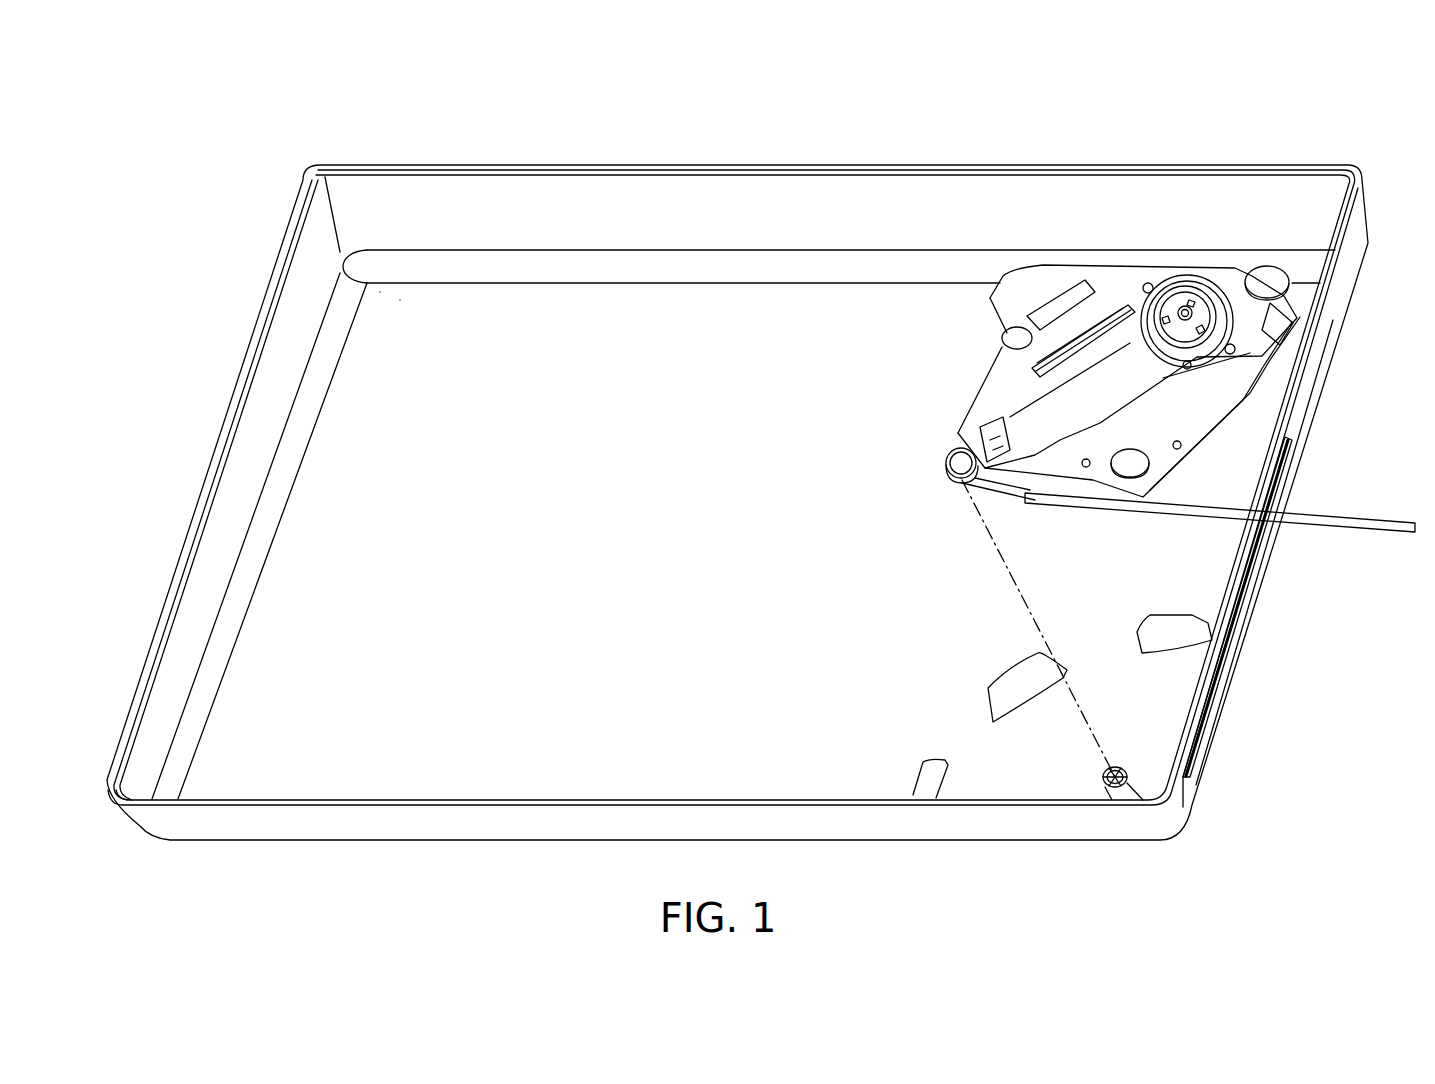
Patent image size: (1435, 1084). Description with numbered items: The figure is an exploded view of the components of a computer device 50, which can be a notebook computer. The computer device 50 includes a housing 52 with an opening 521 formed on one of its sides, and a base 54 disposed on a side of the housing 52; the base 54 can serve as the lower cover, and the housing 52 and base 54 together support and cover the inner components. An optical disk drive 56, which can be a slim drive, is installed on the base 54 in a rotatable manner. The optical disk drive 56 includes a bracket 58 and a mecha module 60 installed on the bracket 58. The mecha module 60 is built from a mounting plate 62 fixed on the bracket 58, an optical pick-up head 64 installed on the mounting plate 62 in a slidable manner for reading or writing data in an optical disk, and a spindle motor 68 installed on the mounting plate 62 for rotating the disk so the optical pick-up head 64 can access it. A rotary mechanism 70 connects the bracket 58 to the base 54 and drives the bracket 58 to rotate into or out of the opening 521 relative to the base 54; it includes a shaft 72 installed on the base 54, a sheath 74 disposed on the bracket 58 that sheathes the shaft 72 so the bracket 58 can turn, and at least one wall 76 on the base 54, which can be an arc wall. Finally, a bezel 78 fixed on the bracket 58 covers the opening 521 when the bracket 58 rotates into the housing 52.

The computer device 50 is at (245, 131).
The housing 52 is at (1337, 327).
The opening 521 is at (1242, 588).
The base 54 is at (588, 766).
The optical disk drive 56 is at (1302, 271).
The bracket 58 is at (1273, 370).
The mecha module 60 is at (1273, 132).
The mounting plate 62 is at (1190, 310).
The optical pick-up head 64 is at (1222, 292).
The spindle motor 68 is at (1174, 300).
The rotary mechanism 70 is at (915, 538).
The shaft 72 is at (1105, 772).
The sheath 74 is at (960, 480).
The wall 76 is at (918, 772).
The bezel 78 is at (1324, 527).